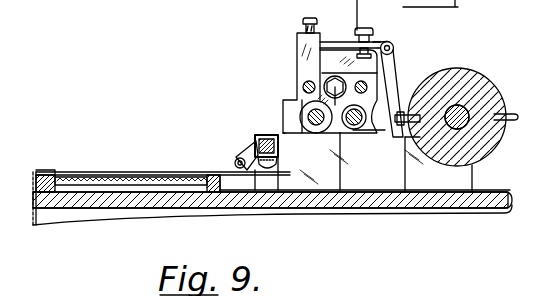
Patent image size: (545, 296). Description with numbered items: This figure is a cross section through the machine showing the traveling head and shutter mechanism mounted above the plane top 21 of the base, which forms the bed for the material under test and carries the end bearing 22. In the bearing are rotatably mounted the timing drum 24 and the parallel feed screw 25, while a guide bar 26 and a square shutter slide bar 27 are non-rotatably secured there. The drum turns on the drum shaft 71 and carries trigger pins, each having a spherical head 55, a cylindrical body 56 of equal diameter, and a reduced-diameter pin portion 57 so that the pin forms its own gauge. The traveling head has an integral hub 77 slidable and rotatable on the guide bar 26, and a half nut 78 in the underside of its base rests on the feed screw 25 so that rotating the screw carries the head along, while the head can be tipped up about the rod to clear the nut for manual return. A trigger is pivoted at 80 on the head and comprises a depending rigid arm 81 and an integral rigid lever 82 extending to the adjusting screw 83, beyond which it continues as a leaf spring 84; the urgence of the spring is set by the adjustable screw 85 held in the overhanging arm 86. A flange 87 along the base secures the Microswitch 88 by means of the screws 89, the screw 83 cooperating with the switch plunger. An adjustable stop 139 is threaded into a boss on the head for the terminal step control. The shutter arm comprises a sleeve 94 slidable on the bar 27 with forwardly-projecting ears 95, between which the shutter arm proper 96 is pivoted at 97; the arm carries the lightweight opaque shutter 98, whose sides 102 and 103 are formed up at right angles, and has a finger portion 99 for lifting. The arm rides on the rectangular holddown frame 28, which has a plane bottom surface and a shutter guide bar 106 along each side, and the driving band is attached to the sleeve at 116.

The plane top 21 is at (127, 190).
The end bearing 22 is at (457, 177).
The timing drum 24 is at (472, 84).
The feed screw 25 is at (353, 124).
The guide bar 26 is at (303, 112).
The shutter slide bar 27 is at (260, 140).
The rectangular frame 28 is at (205, 178).
The spherical head 55 is at (513, 118).
The cylindrical body 56 is at (402, 125).
The pin portion 57 is at (404, 124).
The drum shaft 71 is at (484, 91).
The hub 77 is at (300, 125).
The half nut 78 is at (327, 143).
The pivot 80 is at (394, 48).
The rigid arm 81 is at (390, 77).
The rigid lever 82 is at (374, 43).
The adjusting screw 83 is at (367, 32).
The leaf spring 84 is at (330, 42).
The adjustable screw 85 is at (302, 16).
The overhanging arm 86 is at (297, 35).
The flange 87 is at (405, 60).
The Microswitch 88 is at (330, 67).
The screws 89 is at (303, 83).
The sleeve 94 is at (255, 138).
The ears 95 is at (247, 152).
The shutter arm proper 96 is at (103, 172).
The pivot 97 is at (236, 163).
The shutter 98 is at (73, 182).
The finger portion 99 is at (50, 173).
The side 102 is at (50, 172).
The side 103 is at (178, 168).
The shutter guide bar 106 is at (34, 172).
The band attachment 116 is at (265, 170).
The adjustable stop 139 is at (339, 161).